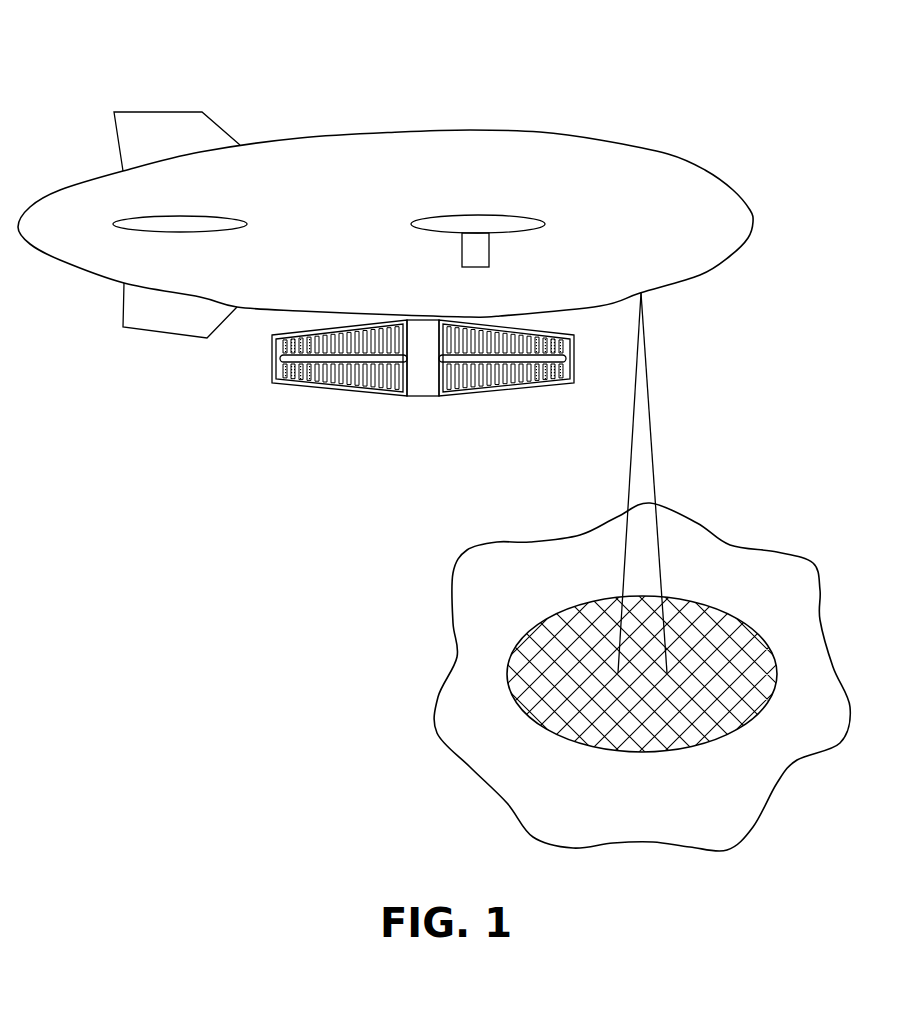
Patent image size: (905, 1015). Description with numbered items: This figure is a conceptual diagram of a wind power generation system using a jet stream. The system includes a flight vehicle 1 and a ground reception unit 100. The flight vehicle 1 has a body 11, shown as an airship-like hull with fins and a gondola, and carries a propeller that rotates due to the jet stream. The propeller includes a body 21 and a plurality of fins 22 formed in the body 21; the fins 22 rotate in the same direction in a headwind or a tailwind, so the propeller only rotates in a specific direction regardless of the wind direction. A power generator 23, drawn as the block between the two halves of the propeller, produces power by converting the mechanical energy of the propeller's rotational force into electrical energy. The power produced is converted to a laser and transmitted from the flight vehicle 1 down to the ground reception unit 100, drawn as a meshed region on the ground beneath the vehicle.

The flight vehicle 1 is at (548, 107).
The body 11 is at (668, 153).
The body 21 is at (282, 380).
The fin 22 is at (348, 388).
The power generator 23 is at (427, 380).
The ground reception unit 100 is at (717, 612).